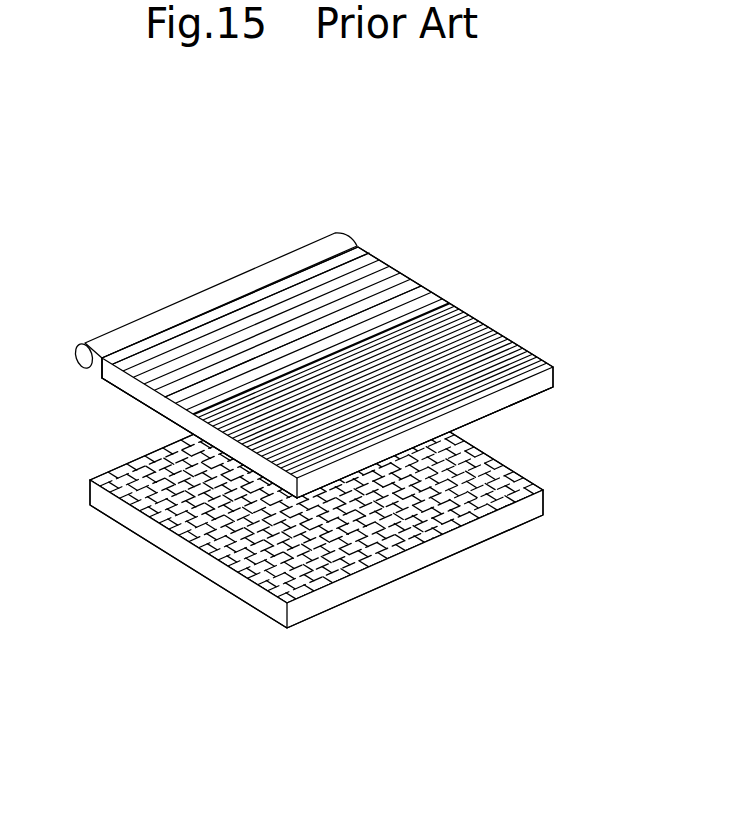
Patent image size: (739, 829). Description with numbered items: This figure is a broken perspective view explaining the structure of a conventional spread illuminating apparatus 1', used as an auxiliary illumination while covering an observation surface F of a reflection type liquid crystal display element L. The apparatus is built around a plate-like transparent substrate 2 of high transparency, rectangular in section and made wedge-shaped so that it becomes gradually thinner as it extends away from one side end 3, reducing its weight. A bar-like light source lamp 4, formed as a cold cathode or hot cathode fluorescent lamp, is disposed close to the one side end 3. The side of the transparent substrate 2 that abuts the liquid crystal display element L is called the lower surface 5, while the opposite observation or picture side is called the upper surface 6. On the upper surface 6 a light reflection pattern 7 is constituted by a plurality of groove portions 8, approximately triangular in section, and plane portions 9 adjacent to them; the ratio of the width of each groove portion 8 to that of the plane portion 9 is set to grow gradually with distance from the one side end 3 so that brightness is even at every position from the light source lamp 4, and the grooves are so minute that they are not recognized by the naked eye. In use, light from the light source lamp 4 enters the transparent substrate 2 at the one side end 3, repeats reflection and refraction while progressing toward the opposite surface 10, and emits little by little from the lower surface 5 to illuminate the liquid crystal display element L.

The spread illuminating apparatus 1' is at (312, 407).
The transparent substrate 2 is at (108, 391).
The one side end 3 is at (97, 368).
The light source lamp 4 is at (207, 295).
The lower surface 5 is at (150, 410).
The upper surface 6 is at (182, 358).
The light reflection pattern 7 is at (176, 598).
The groove portion 8 is at (257, 480).
The plane portion 9 is at (200, 418).
The opposite surface 10 is at (520, 395).
The observation surface F is at (427, 537).
The liquid crystal display element L is at (374, 607).